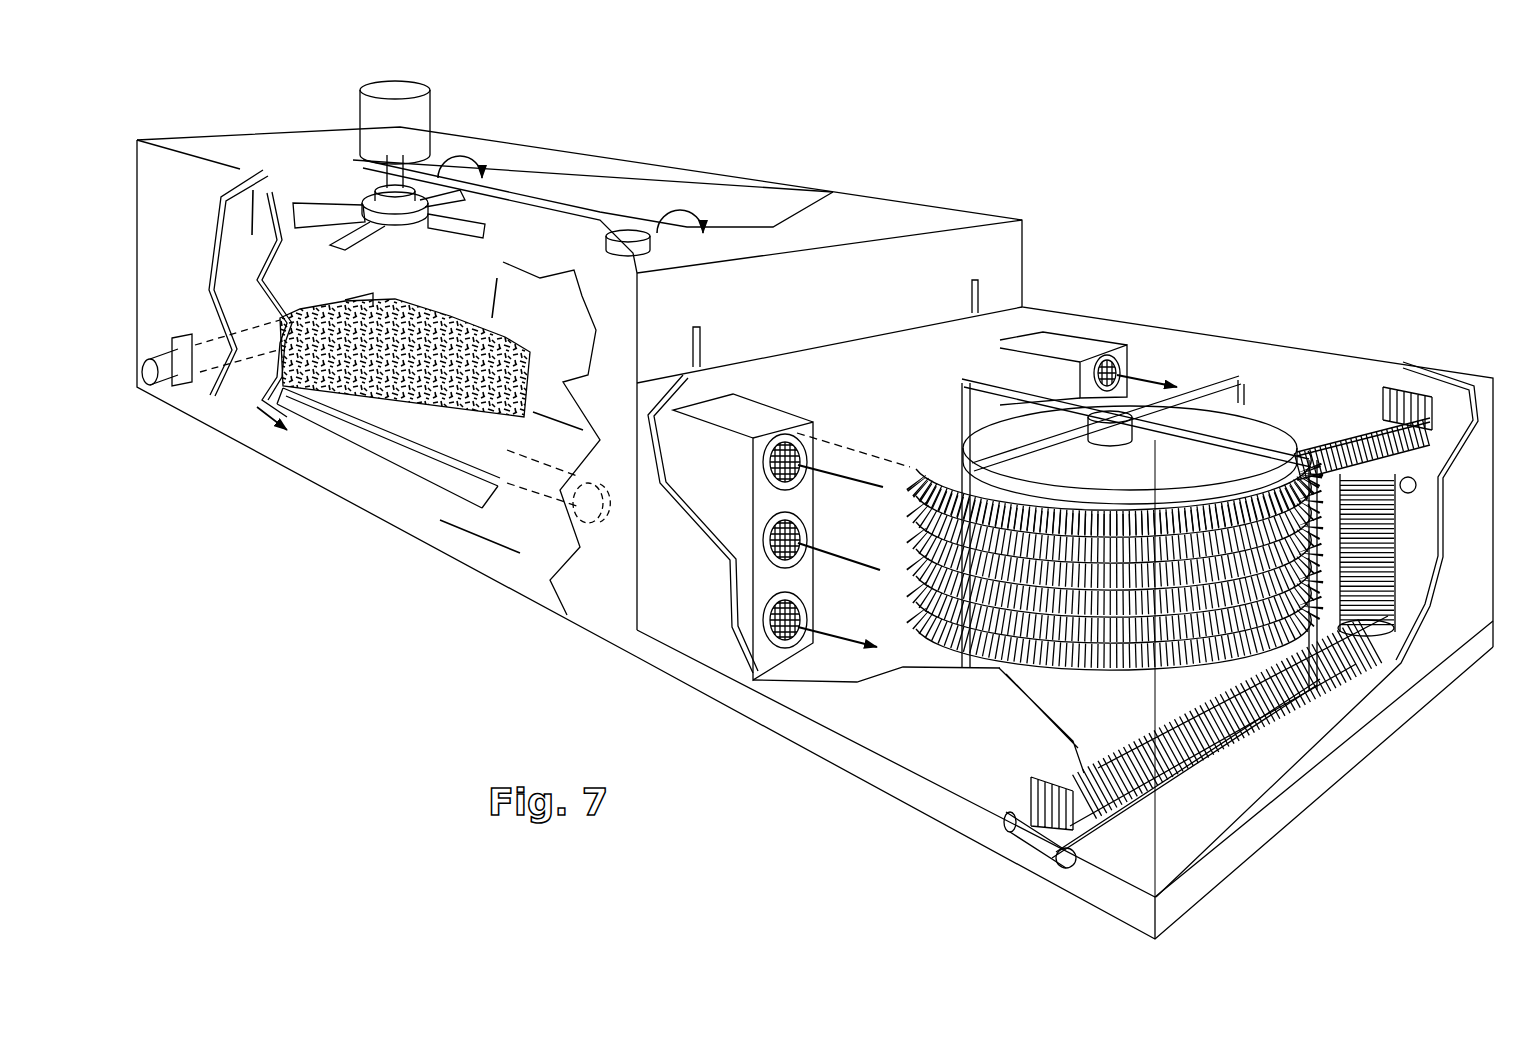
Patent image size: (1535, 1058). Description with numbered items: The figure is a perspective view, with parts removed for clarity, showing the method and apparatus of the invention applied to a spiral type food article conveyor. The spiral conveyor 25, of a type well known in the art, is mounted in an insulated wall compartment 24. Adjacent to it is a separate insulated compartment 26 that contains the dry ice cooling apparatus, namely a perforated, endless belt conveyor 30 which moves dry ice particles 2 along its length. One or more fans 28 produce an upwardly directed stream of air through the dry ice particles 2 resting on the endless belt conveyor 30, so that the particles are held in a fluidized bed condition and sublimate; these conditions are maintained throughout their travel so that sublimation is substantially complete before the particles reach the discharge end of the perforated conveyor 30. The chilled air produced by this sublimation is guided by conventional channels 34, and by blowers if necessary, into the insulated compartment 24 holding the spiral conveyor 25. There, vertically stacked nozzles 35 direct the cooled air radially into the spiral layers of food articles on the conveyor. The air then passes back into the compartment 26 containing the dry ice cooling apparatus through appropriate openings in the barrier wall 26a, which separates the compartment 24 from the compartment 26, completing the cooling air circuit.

The dry ice particles 2 is at (430, 310).
The insulated wall compartment 24 is at (1268, 392).
The spiral conveyor 25 is at (1182, 476).
The insulated compartment 26 is at (942, 190).
The barrier wall 26a is at (893, 428).
The fan 28 is at (455, 233).
The perforated endless belt conveyor 30 is at (373, 305).
The channels 34 is at (527, 190).
The vertically stacked nozzles 35 is at (787, 613).